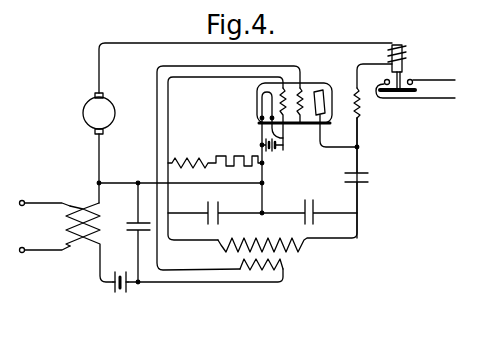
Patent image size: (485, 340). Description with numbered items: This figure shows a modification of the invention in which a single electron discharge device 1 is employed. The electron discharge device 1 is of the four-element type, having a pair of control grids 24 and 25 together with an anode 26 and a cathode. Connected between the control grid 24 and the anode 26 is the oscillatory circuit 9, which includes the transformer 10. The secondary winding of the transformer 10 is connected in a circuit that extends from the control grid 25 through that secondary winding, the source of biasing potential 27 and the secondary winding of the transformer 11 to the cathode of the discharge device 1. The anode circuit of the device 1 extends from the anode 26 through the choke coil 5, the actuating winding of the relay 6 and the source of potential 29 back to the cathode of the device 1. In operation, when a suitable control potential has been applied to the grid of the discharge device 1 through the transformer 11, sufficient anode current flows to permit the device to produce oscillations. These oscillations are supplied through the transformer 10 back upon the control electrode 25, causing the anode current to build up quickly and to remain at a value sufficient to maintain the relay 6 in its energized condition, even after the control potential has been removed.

The electron discharge device 1 is at (312, 86).
The choke coil 5 is at (361, 105).
The relay 6 is at (403, 47).
The oscillatory circuit 9 is at (262, 199).
The transformer 10 is at (278, 257).
The transformer 11 is at (83, 206).
The control grid 24 is at (275, 130).
The control grid 25 is at (301, 108).
The anode 26 is at (318, 91).
The source of biasing potential 27 is at (113, 284).
The source of potential 29 is at (87, 105).